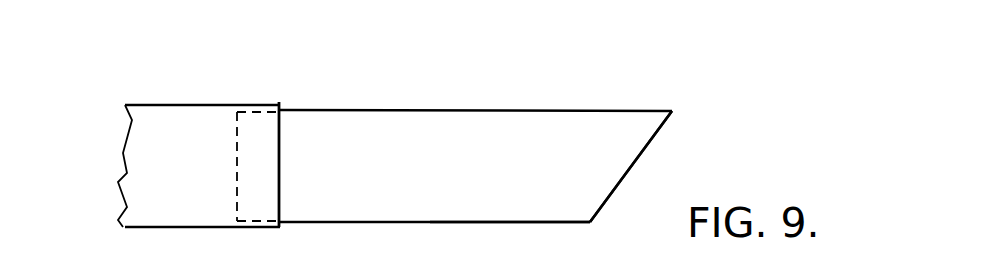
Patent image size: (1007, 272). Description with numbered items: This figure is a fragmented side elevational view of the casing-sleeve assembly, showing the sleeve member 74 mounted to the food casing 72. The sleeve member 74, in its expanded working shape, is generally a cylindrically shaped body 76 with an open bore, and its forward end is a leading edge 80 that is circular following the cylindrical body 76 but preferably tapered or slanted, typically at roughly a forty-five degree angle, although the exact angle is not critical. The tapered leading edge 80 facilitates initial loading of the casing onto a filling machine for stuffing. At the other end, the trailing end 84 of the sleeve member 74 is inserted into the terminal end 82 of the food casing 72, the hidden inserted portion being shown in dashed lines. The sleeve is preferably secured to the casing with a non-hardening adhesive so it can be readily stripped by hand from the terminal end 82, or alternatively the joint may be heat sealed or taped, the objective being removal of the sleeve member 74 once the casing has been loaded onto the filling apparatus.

The food casing 72 is at (140, 167).
The sleeve member 74 is at (520, 110).
The cylindrically shaped body 76 is at (435, 210).
The leading edge 80 is at (663, 131).
The terminal end 82 is at (280, 137).
The trailing end 84 is at (257, 120).